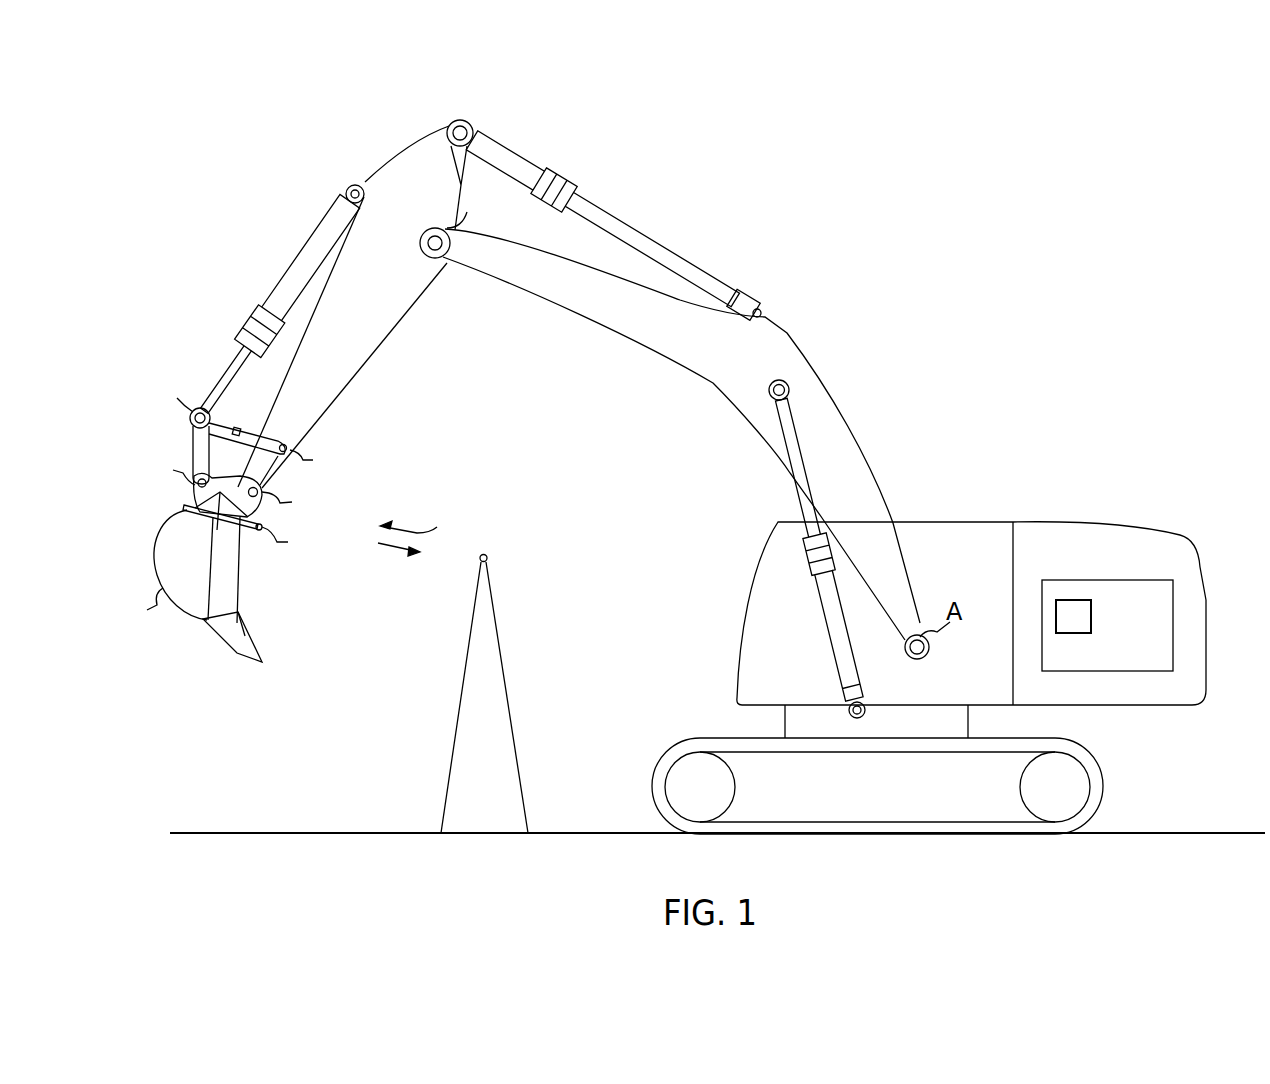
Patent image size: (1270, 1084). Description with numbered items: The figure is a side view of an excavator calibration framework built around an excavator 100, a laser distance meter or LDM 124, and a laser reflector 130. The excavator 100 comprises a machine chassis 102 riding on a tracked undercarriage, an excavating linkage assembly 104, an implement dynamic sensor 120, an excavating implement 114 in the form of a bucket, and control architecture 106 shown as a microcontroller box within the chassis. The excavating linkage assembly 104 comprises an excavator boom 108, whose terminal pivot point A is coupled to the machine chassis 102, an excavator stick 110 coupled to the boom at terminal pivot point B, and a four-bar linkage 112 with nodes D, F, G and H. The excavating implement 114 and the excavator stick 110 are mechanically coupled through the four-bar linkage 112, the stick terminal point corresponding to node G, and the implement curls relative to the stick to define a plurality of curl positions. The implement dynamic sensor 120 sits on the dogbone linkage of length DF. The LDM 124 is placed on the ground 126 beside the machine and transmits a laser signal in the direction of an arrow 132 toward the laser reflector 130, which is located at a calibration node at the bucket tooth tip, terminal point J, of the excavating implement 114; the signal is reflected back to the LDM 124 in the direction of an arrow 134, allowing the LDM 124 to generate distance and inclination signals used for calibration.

The excavator 100 is at (995, 243).
The machine chassis 102 is at (1052, 522).
The excavating linkage assembly 104 is at (680, 168).
The control architecture 106 is at (1092, 613).
The excavator boom 108 is at (660, 320).
The excavator stick 110 is at (350, 357).
The four-bar linkage 112 is at (175, 448).
The excavating implement 114 is at (170, 557).
The implement dynamic sensor 120 is at (238, 428).
The laser distance meter (LDM) 124 is at (507, 680).
The ground 126 is at (1197, 833).
The laser reflector 130 is at (260, 663).
The arrow 132 is at (426, 514).
The arrow 134 is at (392, 552).